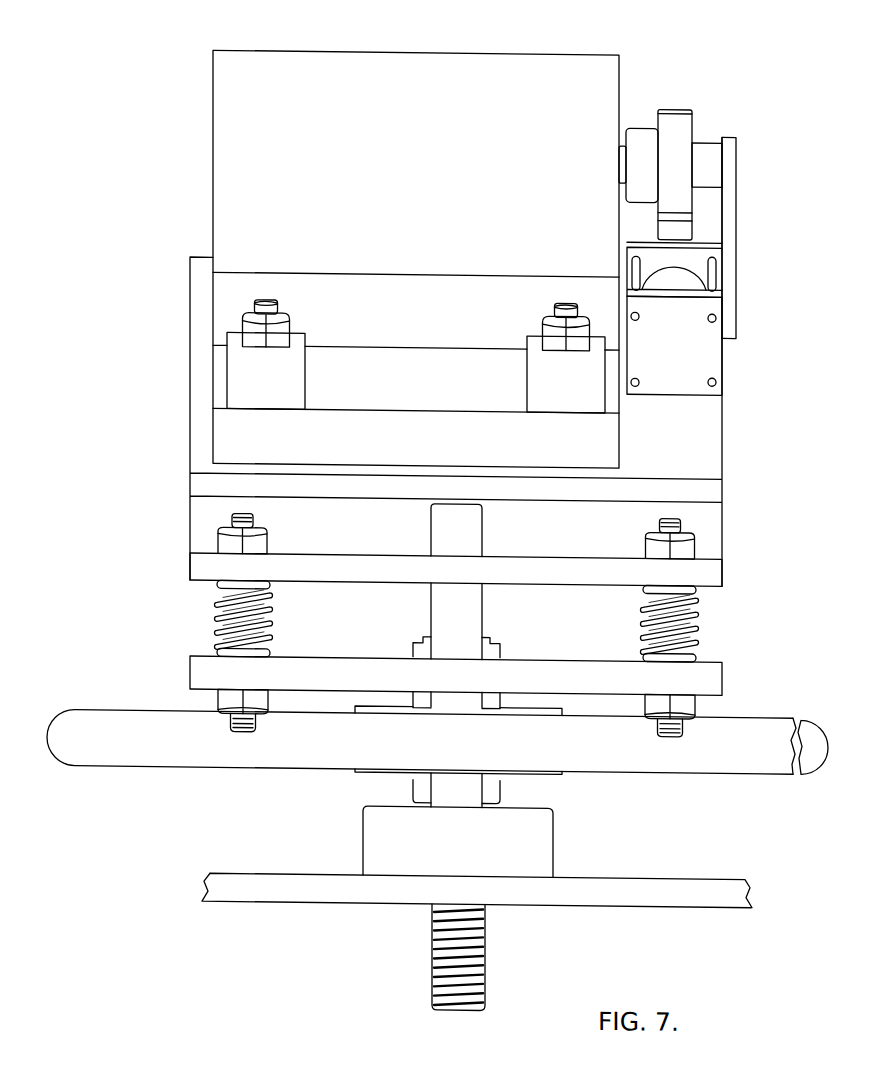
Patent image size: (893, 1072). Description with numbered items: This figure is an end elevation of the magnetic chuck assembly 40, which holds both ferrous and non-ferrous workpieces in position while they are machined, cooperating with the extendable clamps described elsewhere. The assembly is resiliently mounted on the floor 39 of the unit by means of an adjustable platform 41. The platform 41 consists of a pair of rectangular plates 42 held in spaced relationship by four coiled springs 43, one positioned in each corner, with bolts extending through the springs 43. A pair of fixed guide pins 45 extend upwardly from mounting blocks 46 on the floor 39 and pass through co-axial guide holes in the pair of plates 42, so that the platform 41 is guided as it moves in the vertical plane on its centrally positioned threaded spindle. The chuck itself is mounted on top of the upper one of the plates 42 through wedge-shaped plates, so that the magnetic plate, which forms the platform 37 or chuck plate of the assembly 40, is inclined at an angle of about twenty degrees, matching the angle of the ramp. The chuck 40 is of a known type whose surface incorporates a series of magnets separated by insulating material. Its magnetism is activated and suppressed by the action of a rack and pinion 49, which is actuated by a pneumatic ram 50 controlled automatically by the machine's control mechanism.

The platform 37 is at (402, 64).
The floor 39 is at (262, 892).
The magnetic chuck assembly 40 is at (750, 240).
The adjustable platform 41 is at (96, 623).
The rectangular plates 42 is at (197, 560).
The coiled springs 43 is at (264, 629).
The guide pins 45 is at (470, 521).
The mounting blocks 46 is at (535, 841).
The rack and pinion 49 is at (722, 121).
The pneumatic ram 50 is at (700, 359).